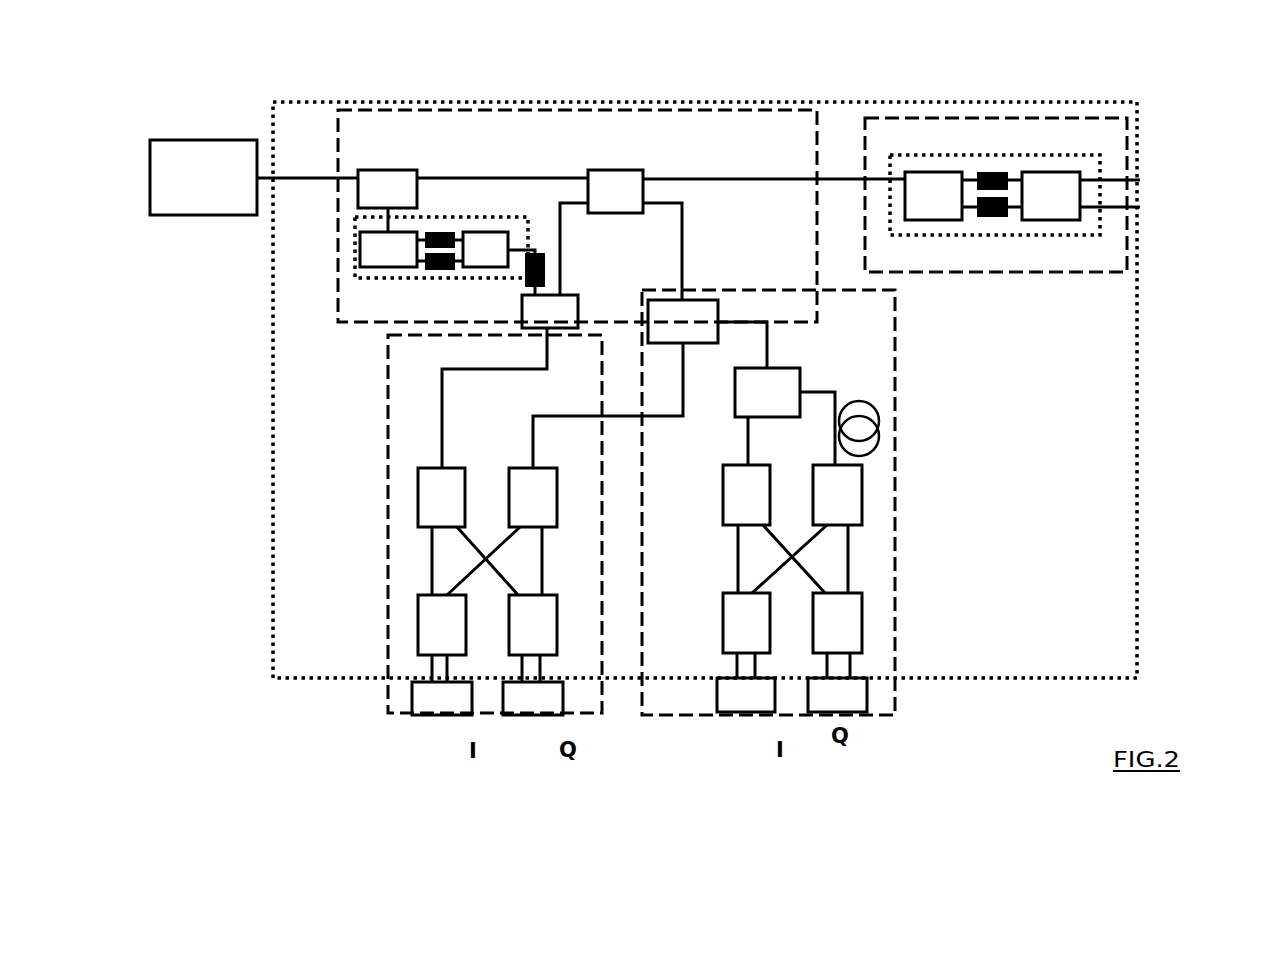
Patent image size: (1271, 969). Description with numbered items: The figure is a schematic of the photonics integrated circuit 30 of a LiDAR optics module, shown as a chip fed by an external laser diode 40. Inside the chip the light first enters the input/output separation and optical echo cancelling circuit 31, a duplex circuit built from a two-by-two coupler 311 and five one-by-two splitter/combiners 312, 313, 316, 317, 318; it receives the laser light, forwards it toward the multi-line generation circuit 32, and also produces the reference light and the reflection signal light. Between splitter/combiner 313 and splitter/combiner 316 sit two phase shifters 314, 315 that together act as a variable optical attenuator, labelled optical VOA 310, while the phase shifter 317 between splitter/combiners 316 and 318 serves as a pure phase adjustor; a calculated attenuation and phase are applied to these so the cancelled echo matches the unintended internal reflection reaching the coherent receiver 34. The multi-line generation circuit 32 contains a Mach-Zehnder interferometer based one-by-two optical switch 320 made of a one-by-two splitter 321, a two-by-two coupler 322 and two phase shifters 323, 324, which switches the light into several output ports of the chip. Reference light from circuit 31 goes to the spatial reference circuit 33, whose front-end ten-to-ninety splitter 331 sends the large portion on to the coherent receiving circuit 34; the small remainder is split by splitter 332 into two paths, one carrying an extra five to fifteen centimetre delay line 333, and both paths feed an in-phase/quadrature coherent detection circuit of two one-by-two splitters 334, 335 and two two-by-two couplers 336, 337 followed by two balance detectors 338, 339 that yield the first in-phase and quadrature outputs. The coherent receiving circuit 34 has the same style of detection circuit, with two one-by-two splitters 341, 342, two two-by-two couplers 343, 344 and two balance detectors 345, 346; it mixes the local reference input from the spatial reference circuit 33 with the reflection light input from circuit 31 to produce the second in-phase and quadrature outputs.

The photonics integrated circuit 30 is at (1138, 480).
The input/output separation and optical echo cancelling circuit 31 is at (340, 145).
The multi-line generation circuit 32 is at (865, 140).
The spatial reference circuit 33 is at (895, 513).
The coherent receiving circuit 34 is at (388, 420).
The laser diode 40 is at (233, 163).
The optical VOA 310 is at (352, 240).
The 2×2 coupler 311 is at (633, 183).
The 1×2 splitter/combiner 312 is at (383, 202).
The 1×2 splitter/combiner 313 is at (405, 235).
The phase shifter 314 is at (500, 238).
The phase shifter 315 is at (427, 273).
The 1×2 splitter/combiner 316 is at (518, 273).
The phase shifter 317 is at (522, 267).
The 1×2 splitter/combiner 318 is at (565, 300).
The 1×2 optical switch 320 is at (888, 227).
The 1×2 splitter 321 is at (942, 185).
The 2×2 coupler 322 is at (1067, 187).
The phase shifter 323 is at (982, 173).
The phase shifter 324 is at (978, 220).
The 10:90 1×2 splitter 331 is at (700, 307).
The 1×2 splitter 332 is at (793, 373).
The delay line 333 is at (860, 417).
The 1×2 splitter 334 is at (725, 468).
The 1×2 splitter 335 is at (862, 470).
The 2×2 coupler 336 is at (723, 597).
The 2×2 coupler 337 is at (862, 597).
The balance detector 338 is at (718, 680).
The balance detector 339 is at (867, 680).
The 1×2 splitter 341 is at (418, 472).
The 1×2 splitter 342 is at (520, 512).
The 2×2 coupler 343 is at (420, 600).
The 2×2 coupler 344 is at (522, 617).
The balance detector 345 is at (427, 697).
The balance detector 346 is at (535, 692).